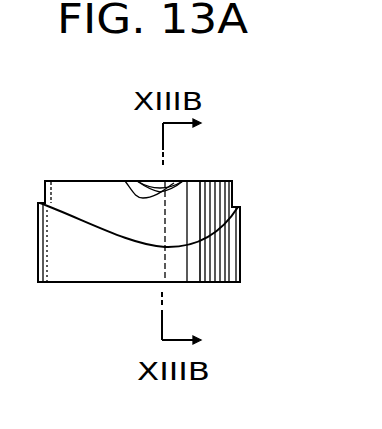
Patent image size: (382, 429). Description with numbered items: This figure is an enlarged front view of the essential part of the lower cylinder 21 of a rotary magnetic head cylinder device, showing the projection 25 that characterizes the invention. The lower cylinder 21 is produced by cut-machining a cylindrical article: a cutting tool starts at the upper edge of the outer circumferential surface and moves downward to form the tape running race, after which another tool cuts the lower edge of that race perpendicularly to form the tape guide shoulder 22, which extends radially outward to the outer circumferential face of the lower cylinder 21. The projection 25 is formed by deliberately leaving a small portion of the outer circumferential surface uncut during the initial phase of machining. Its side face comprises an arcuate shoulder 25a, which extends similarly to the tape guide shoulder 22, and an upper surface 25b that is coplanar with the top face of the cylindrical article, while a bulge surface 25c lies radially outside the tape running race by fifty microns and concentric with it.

The lower cylinder 21 is at (53, 282).
The tape guide shoulder 22 is at (122, 236).
The projection 25 is at (170, 190).
The arcuate shoulder 25a is at (125, 181).
The upper surface 25b is at (148, 185).
The bulge surface 25c is at (181, 183).